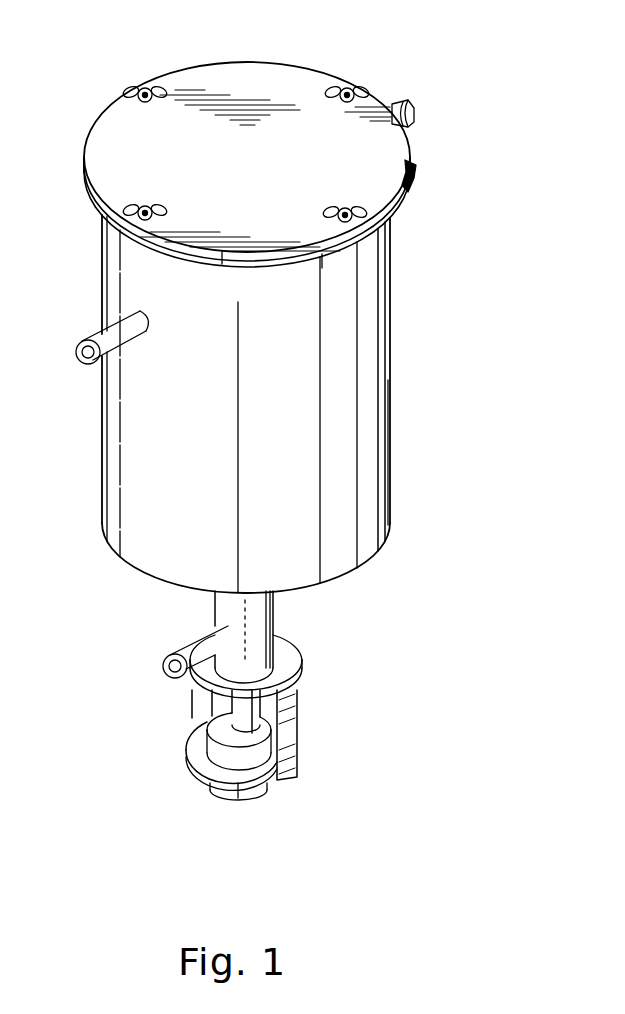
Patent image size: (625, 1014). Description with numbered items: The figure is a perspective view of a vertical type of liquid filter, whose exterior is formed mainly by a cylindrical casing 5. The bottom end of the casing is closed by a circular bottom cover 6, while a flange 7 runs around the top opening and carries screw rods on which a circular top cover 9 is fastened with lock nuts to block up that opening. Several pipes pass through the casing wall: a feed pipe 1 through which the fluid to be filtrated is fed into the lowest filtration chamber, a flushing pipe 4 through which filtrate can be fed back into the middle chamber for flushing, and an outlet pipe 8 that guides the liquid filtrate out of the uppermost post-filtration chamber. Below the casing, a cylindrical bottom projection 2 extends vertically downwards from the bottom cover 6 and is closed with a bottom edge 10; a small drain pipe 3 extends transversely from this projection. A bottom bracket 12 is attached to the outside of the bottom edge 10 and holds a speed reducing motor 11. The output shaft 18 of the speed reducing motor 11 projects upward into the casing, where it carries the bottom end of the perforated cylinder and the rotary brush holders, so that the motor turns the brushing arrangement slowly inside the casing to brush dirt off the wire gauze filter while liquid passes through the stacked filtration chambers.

The feed pipe 1 is at (103, 327).
The cylindrical bottom projection 2 is at (277, 612).
The small drain pipe 3 is at (183, 635).
The flushing pipe 4 is at (413, 168).
The cylindrical casing 5 is at (386, 405).
The circular bottom cover 6 is at (374, 552).
The flange 7 is at (392, 224).
The outlet pipe 8 is at (403, 100).
The circular top cover 9 is at (303, 73).
The bottom edge 10 is at (300, 652).
The speed reducing motor 11 is at (264, 790).
The bottom bracket 12 is at (293, 723).
The output shaft 18 is at (233, 716).